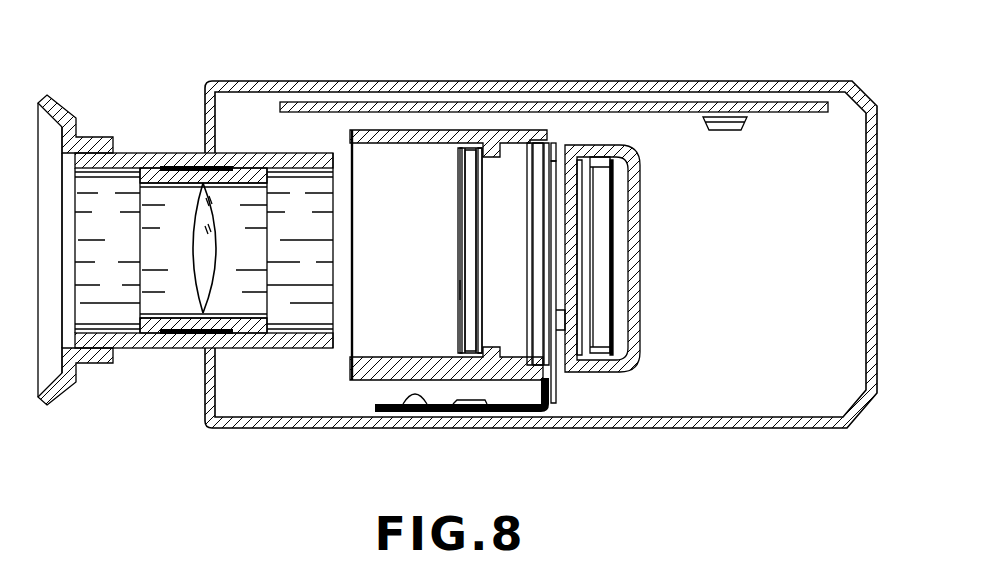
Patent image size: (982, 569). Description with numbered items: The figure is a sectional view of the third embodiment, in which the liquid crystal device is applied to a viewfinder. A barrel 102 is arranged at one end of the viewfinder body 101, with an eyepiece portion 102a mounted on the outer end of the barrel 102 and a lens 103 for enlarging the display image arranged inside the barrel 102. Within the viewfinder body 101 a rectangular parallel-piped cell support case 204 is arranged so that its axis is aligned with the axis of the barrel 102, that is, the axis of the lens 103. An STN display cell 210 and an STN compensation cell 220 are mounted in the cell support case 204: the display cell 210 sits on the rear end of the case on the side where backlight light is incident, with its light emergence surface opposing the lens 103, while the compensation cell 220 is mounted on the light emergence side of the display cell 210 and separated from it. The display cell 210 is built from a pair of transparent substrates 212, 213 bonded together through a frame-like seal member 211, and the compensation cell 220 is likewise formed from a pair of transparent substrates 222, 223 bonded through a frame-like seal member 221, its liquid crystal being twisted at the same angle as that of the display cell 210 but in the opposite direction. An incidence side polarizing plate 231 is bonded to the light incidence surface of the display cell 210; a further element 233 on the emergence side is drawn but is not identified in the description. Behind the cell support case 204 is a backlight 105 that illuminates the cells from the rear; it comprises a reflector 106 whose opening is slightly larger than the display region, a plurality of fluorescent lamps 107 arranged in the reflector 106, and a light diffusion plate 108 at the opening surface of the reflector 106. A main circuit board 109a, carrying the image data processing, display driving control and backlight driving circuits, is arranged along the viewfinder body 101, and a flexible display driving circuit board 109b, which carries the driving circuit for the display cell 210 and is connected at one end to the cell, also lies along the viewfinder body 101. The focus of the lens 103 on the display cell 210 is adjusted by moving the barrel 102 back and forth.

The viewfinder body 101 is at (767, 424).
The barrel 102 is at (168, 160).
The eyepiece portion 102a is at (54, 106).
The lens 103 is at (200, 287).
The backlight 105 is at (655, 302).
The reflector 106 is at (635, 223).
The fluorescent lamps 107 is at (603, 202).
The light diffusion plate 108 is at (573, 275).
The main circuit board 109a is at (296, 106).
The display driving circuit board 109b is at (412, 413).
The cell support case 204 is at (350, 368).
The STN display cell 210 is at (566, 388).
The seal member 211 is at (538, 208).
The transparent substrate 212 is at (553, 143).
The transparent substrate 213 is at (530, 255).
The STN compensation cell 220 is at (500, 170).
The seal member 221 is at (472, 222).
The transparent substrate 222 is at (477, 327).
The transparent substrate 223 is at (463, 172).
The incidence side polarizing plate 231 is at (555, 320).
The electrode 233 is at (459, 288).